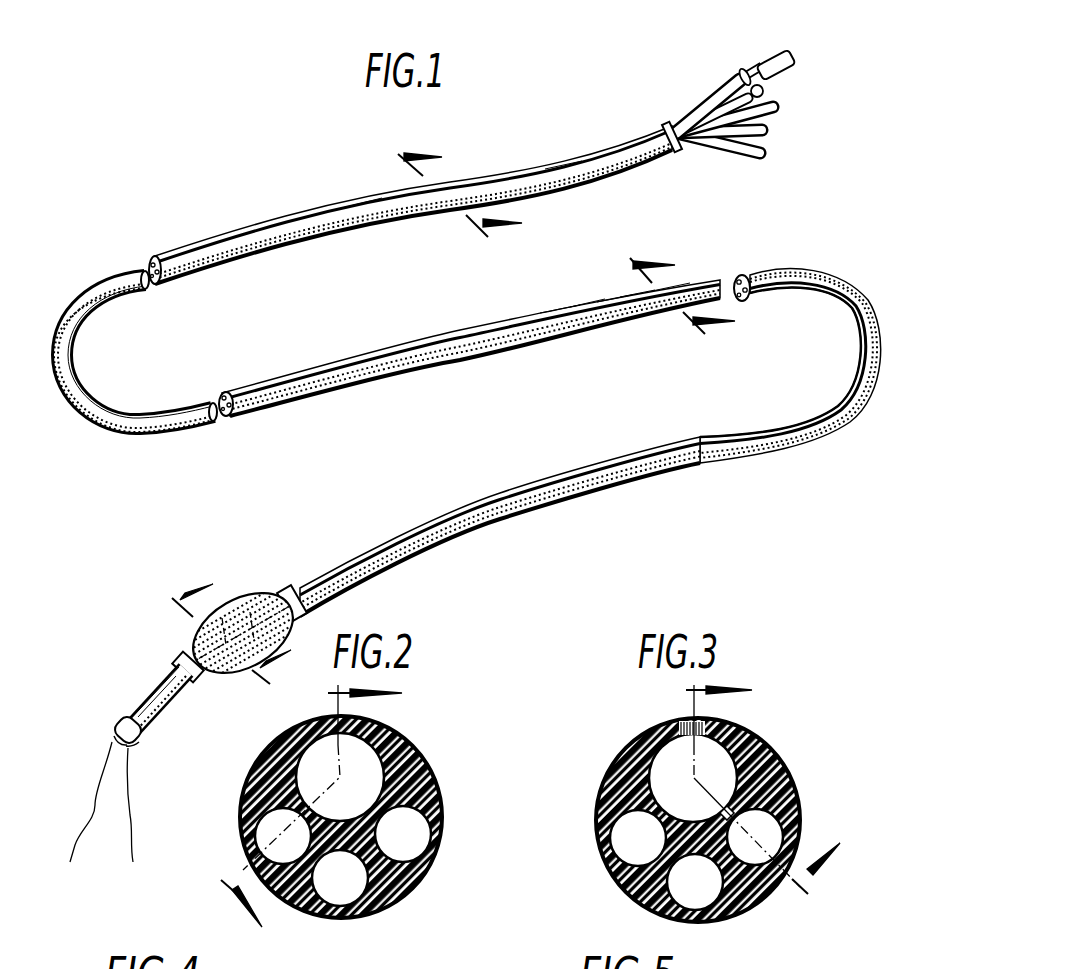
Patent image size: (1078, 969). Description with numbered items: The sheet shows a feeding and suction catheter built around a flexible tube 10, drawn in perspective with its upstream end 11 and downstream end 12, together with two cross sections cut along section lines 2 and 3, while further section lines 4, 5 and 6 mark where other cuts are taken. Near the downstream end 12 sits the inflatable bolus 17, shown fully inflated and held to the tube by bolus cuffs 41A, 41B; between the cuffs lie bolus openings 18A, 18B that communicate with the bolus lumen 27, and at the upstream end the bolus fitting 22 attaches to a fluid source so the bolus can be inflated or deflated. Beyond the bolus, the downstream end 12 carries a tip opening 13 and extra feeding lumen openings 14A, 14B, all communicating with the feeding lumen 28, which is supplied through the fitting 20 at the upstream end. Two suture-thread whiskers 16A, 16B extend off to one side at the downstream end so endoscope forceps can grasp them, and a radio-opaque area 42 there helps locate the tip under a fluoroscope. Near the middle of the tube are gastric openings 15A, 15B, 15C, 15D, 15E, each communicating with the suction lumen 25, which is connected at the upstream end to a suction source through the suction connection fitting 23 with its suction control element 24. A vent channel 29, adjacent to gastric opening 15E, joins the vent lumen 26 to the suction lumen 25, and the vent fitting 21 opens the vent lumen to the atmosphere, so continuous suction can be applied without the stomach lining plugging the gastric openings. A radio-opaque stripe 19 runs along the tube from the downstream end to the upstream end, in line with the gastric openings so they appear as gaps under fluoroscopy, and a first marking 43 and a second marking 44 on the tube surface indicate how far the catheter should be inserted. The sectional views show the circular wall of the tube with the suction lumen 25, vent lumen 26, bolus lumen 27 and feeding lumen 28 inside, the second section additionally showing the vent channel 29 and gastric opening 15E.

In FIG. 1, the flexible tube 10 is at (180, 246).
In FIG. 1, the upstream end 11 is at (673, 118).
In FIG. 1, the downstream end 12 is at (109, 724).
In FIG. 1, the tip opening 13 is at (137, 745).
In FIG. 1, the feeding lumen opening 14A is at (153, 722).
In FIG. 1, the feeding lumen opening 14B is at (167, 708).
In FIG. 1, the gastric opening 15A is at (560, 317).
In FIG. 1, the gastric opening 15B is at (587, 312).
In FIG. 1, the gastric opening 15C is at (613, 308).
In FIG. 1, the gastric opening 15D is at (637, 300).
In FIG. 1, the gastric opening 15E is at (667, 292).
In FIG. 3, the gastric opening 15E is at (705, 723).
In FIG. 1, the whisker 16A is at (78, 817).
In FIG. 1, the whisker 16B is at (136, 820).
In FIG. 1, the inflatable bolus 17 is at (273, 597).
In FIG. 1, the bolus opening 18A is at (253, 604).
In FIG. 1, the bolus opening 18B is at (221, 610).
In FIG. 1, the radio-opaque stripe 19 is at (582, 475).
In FIG. 1, the fitting 20 is at (733, 160).
In FIG. 1, the vent fitting 21 is at (770, 133).
In FIG. 1, the bolus fitting 22 is at (782, 108).
In FIG. 1, the suction connection fitting 23 is at (766, 62).
In FIG. 1, the suction control element 24 is at (763, 89).
In FIG. 2, the suction lumen 25 is at (370, 775).
In FIG. 3, the suction lumen 25 is at (657, 763).
In FIG. 2, the vent lumen 26 is at (417, 835).
In FIG. 3, the vent lumen 26 is at (777, 830).
In FIG. 2, the bolus lumen 27 is at (338, 887).
In FIG. 3, the bolus lumen 27 is at (697, 890).
In FIG. 2, the feeding lumen 28 is at (270, 833).
In FIG. 3, the feeding lumen 28 is at (620, 838).
In FIG. 3, the vent channel 29 is at (722, 813).
In FIG. 1, the bolus cuff 41A is at (184, 655).
In FIG. 1, the bolus cuff 41B is at (307, 617).
In FIG. 1, the radio-opaque area 42 is at (130, 713).
In FIG. 1, the first marking 43 is at (355, 205).
In FIG. 1, the second marking 44 is at (563, 170).
In FIG. 1, the section line 2- 2 is at (454, 196).
In FIG. 1, the section line 3- 3 is at (682, 293).
In FIG. 2, the section line 4- 4 is at (304, 803).
In FIG. 3, the section line 5- 5 is at (754, 793).
In FIG. 1, the section line 6- 6 is at (228, 630).